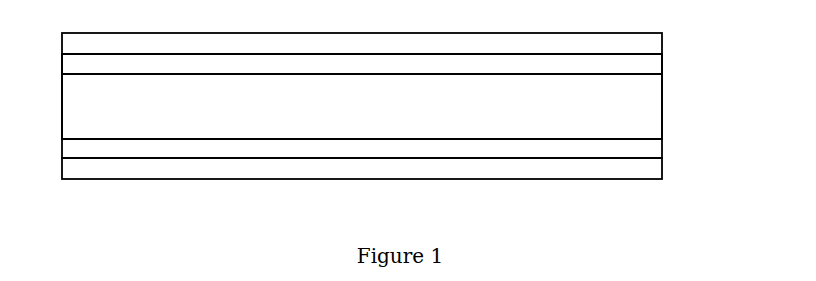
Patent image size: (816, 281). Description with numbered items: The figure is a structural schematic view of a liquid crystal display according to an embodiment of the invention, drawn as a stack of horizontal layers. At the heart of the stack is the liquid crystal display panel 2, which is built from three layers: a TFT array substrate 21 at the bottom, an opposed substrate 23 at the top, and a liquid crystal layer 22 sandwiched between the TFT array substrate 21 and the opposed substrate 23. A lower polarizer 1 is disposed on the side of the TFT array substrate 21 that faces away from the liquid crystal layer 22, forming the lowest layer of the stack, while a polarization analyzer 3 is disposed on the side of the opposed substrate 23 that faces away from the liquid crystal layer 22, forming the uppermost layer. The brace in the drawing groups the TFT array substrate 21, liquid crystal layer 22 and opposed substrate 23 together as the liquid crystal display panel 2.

The lower polarizer 1 is at (649, 172).
The liquid crystal display panel 2 is at (705, 58).
The TFT array substrate 21 is at (633, 151).
The liquid crystal layer 22 is at (636, 108).
The opposed substrate 23 is at (631, 62).
The polarization analyzer 3 is at (628, 43).